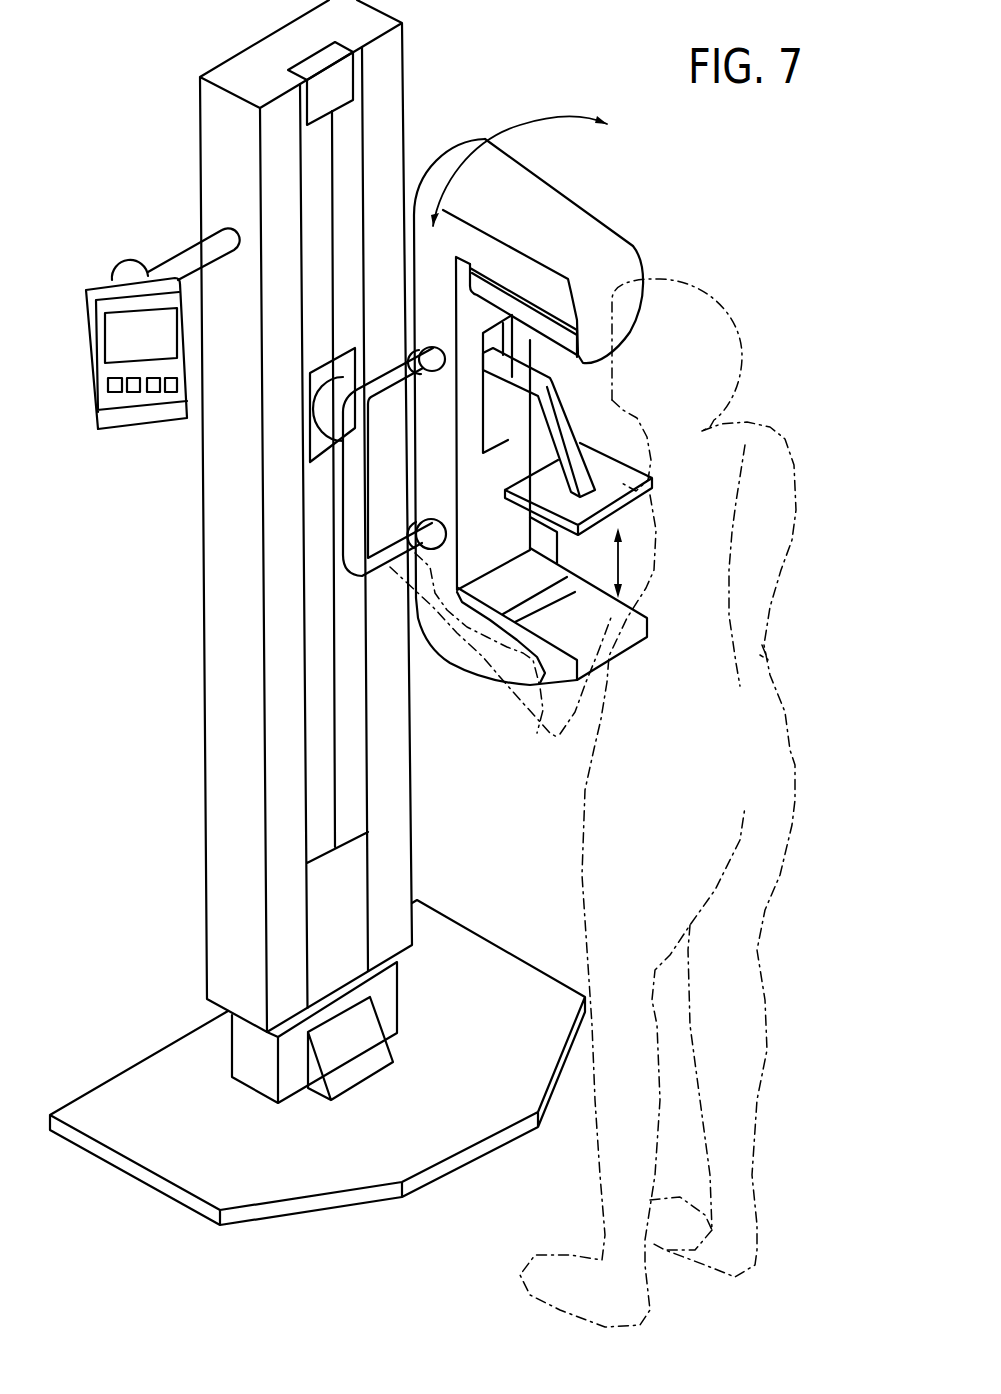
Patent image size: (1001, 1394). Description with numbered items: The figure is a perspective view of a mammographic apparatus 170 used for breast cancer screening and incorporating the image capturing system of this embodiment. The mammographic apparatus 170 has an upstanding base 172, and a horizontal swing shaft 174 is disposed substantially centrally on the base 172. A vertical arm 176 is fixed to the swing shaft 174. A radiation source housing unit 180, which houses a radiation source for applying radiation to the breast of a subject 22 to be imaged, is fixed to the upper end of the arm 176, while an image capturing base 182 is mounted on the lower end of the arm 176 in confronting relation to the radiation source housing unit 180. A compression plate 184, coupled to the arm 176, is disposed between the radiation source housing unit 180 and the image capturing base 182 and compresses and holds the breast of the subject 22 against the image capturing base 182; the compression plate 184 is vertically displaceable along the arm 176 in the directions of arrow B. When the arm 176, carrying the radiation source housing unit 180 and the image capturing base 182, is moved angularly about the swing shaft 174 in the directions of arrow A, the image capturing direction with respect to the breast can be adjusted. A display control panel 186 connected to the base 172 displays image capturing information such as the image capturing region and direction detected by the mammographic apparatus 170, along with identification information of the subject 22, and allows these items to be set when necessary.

The mammographic apparatus 170 is at (790, 179).
The upstanding base 172 is at (217, 590).
The horizontal swing shaft 174 is at (390, 427).
The vertical arm 176 is at (428, 243).
The radiation source housing unit 180 is at (622, 276).
The image capturing base 182 is at (570, 636).
The compression plate 184 is at (612, 492).
The display control panel 186 is at (116, 341).
The subject 22 is at (765, 724).